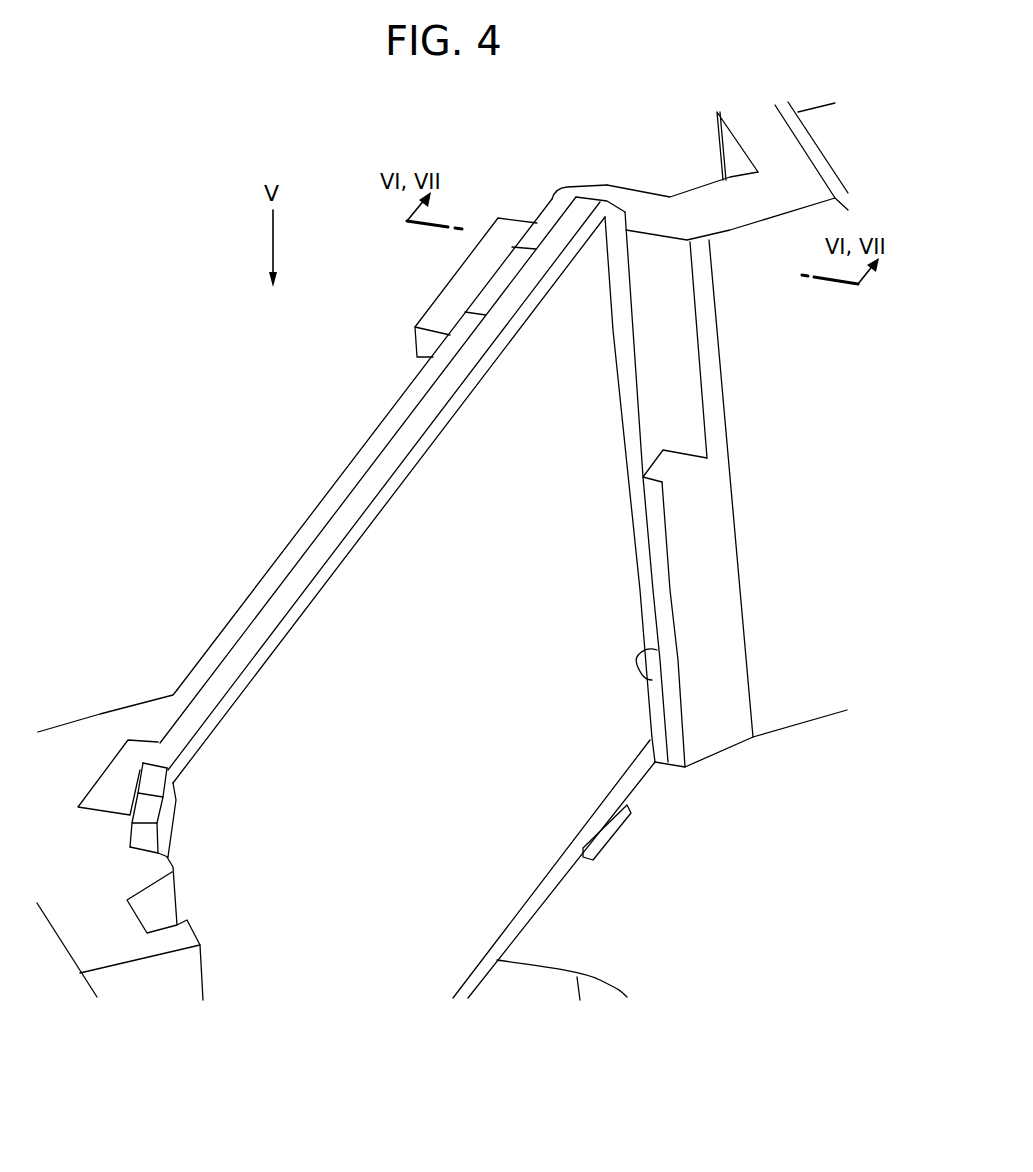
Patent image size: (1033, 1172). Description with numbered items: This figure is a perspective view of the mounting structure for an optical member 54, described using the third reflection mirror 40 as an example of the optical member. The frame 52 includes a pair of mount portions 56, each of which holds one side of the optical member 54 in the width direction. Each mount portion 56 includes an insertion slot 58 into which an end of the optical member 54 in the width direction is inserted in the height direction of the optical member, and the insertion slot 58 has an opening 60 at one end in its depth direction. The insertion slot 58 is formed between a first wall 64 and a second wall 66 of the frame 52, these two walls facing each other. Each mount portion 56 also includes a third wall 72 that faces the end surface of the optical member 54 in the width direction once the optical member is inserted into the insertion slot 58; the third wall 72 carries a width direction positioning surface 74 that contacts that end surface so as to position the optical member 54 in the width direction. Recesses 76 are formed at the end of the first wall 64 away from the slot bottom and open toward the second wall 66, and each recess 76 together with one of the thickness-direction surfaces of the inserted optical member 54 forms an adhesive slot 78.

The third reflection mirror 40 is at (392, 490).
The frame 52 is at (654, 890).
The optical member 54 is at (384, 573).
The mount portion 56 is at (665, 366).
The insertion slot 58 is at (645, 678).
The opening 60 is at (643, 477).
The first wall 64 is at (552, 199).
The second wall 66 is at (705, 555).
The third wall 72 is at (662, 260).
The width direction positioning surface 74 is at (727, 174).
The recess 76 is at (495, 278).
The adhesive slot 78 is at (307, 500).